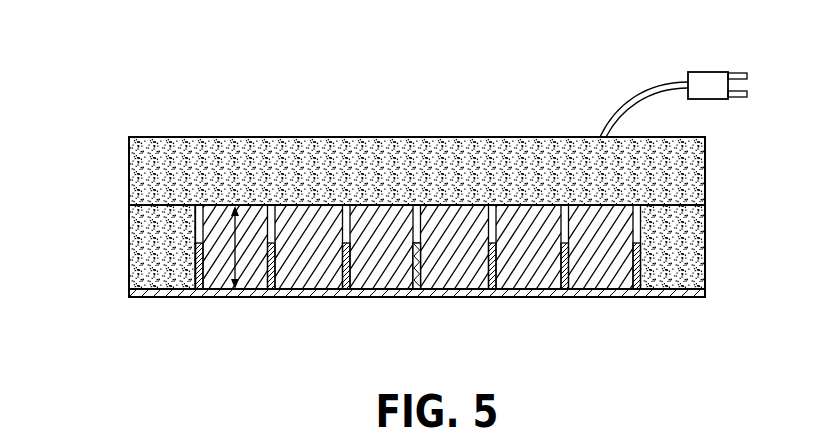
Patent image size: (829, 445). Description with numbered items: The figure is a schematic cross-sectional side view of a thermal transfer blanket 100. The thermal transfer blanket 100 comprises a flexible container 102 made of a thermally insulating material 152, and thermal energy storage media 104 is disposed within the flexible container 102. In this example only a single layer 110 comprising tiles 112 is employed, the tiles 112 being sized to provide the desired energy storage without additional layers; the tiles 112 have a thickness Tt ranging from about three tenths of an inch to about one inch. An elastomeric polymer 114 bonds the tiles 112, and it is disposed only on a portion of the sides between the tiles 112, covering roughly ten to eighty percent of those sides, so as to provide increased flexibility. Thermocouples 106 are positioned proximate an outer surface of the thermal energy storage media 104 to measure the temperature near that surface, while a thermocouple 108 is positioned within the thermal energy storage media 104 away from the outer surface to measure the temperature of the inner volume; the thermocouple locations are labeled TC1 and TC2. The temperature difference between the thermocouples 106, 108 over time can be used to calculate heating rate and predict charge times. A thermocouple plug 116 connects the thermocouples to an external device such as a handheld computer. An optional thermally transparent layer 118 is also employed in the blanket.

The thermal transfer blanket 100 is at (99, 39).
The flexible container 102 is at (692, 190).
The thermal energy storage media 104 is at (600, 290).
The thermocouple 106 is at (321, 291).
The thermocouple 108 is at (401, 289).
The layer 110 is at (640, 288).
The tile 112 is at (640, 270).
The elastomeric polymer 114 is at (198, 287).
The thermocouple plug 116 is at (708, 72).
The thermally transparent layer 118 is at (553, 291).
The thermally insulating material 152 is at (158, 262).
The tile thickness Tt is at (232, 279).
The first thermocouple TC1 is at (345, 313).
The second thermocouple TC2 is at (491, 312).